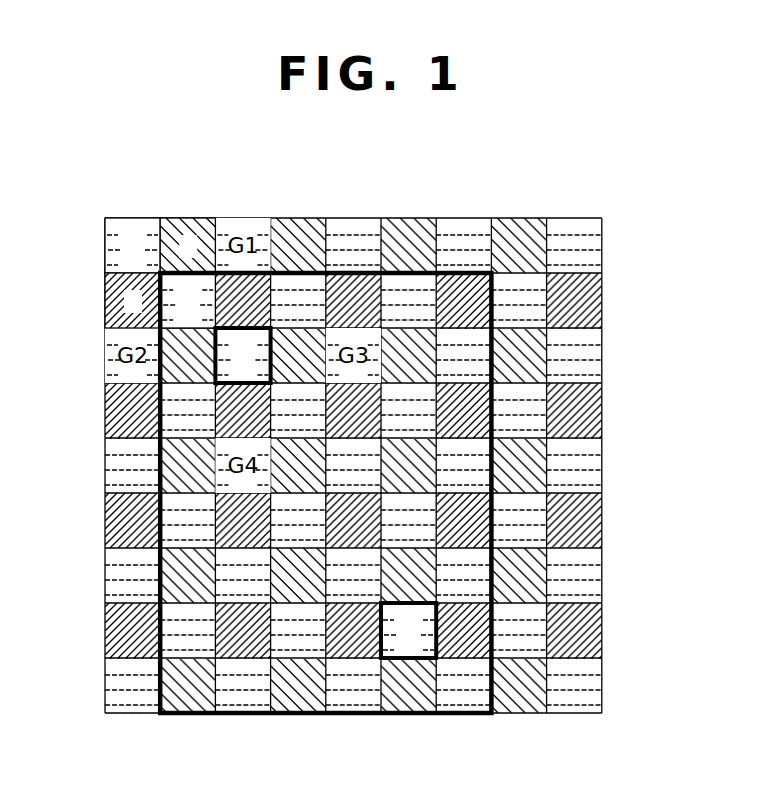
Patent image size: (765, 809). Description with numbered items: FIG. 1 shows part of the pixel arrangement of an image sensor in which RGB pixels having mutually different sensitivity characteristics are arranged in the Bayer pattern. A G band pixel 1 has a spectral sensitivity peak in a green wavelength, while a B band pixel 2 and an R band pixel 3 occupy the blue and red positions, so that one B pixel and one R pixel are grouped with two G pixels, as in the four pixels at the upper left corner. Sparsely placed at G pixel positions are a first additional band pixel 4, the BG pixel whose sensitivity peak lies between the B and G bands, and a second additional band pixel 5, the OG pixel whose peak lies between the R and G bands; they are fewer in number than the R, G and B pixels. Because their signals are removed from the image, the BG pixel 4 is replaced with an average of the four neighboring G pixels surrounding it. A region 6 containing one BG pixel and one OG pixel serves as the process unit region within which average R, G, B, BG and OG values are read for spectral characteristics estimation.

The G band pixel 1 is at (135, 228).
The B band pixel 2 is at (113, 299).
The R band pixel 3 is at (192, 228).
The first additional band pixel 4 is at (210, 375).
The second additional band pixel 5 is at (403, 650).
The region 6 is at (493, 525).